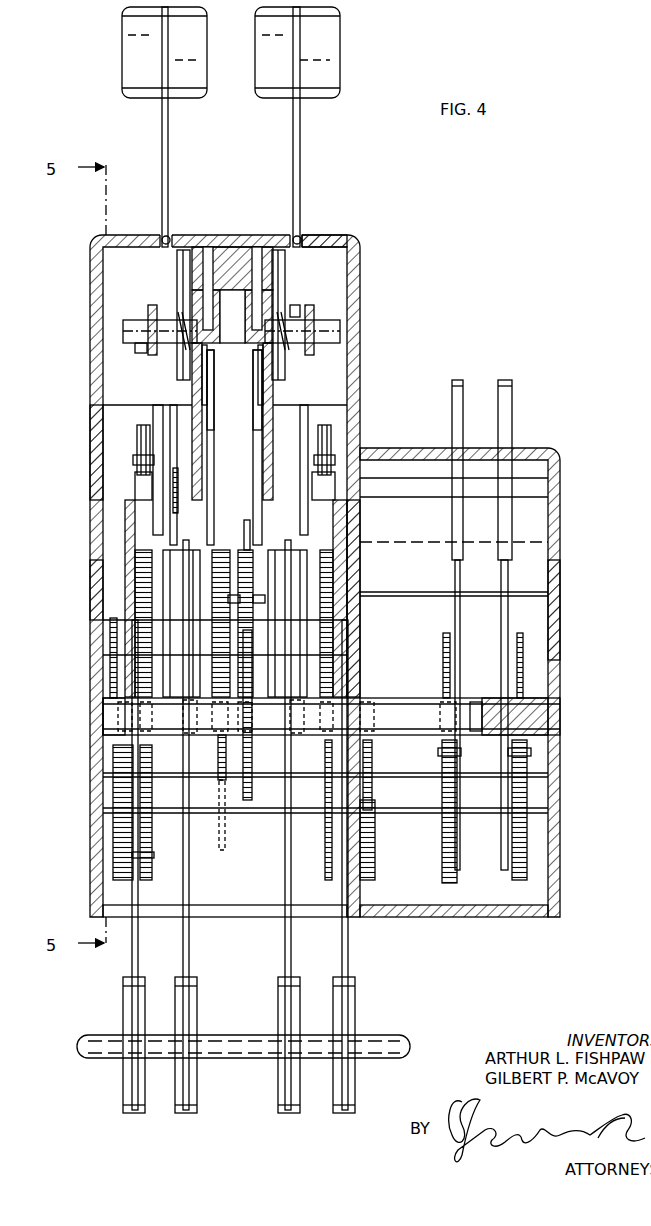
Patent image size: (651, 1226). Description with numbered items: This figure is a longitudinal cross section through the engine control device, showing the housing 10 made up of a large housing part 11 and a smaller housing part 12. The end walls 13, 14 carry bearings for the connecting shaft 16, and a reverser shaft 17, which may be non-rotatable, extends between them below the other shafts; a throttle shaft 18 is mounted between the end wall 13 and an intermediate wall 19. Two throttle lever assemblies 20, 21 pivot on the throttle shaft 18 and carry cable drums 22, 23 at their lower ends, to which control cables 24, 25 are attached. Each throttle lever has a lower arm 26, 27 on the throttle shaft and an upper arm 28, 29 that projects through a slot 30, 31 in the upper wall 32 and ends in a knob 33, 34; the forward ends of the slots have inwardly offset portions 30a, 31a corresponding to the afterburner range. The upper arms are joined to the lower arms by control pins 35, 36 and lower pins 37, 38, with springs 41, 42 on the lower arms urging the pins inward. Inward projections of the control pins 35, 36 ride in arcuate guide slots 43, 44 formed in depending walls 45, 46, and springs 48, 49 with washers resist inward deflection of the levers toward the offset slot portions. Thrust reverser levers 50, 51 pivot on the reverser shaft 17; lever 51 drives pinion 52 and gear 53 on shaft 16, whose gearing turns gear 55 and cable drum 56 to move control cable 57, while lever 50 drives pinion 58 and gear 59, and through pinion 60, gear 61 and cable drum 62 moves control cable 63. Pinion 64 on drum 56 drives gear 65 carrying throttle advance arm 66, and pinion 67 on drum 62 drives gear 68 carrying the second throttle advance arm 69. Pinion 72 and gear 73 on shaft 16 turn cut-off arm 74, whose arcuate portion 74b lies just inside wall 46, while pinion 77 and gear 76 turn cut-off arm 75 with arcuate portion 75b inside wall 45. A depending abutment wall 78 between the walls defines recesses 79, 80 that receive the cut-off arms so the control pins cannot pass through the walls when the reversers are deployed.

The housing 10 is at (88, 356).
The large housing part 11 is at (90, 440).
The smaller housing part 12 is at (560, 463).
The end wall 13 is at (90, 590).
The end wall 14 is at (560, 605).
The connecting shaft 16 is at (400, 706).
The reverser shaft 17 is at (412, 800).
The throttle shaft 18 is at (110, 614).
The intermediate wall 19 is at (350, 575).
The throttle lever assembly 20 is at (160, 410).
The throttle lever assembly 21 is at (312, 410).
The cable drum 22 is at (190, 708).
The cable drum 23 is at (297, 708).
The control cable 24 is at (189, 947).
The control cable 25 is at (285, 943).
The lower arm 26 is at (153, 524).
The lower arm 27 is at (300, 525).
The upper arm 28 is at (163, 166).
The upper arm 29 is at (300, 168).
The slot 30 is at (170, 236).
The offset slot portion 30a is at (177, 268).
The slot 31 is at (300, 236).
The offset slot portion 31a is at (285, 268).
The upper wall 32 is at (340, 242).
The knob 33 is at (200, 72).
The knob 34 is at (330, 30).
The control pin 35 is at (140, 318).
The control pin 36 is at (340, 322).
The pin 37 is at (135, 486).
The pin 38 is at (335, 486).
The spring 41 is at (137, 441).
The spring 42 is at (331, 441).
The arcuate guide slot 43 is at (202, 328).
The arcuate guide slot 44 is at (259, 352).
The depending wall 45 is at (204, 355).
The depending wall 46 is at (268, 378).
The spring 48 is at (180, 346).
The spring 49 is at (306, 345).
The thrust reverser lever 50 is at (463, 395).
The thrust reverser lever 51 is at (512, 406).
The pinion 52 is at (527, 852).
The gear 53 is at (523, 642).
The gear 55 is at (375, 864).
The cable drum 56 is at (382, 774).
The control cable 57 is at (348, 947).
The pinion 58 is at (442, 875).
The gear 59 is at (443, 648).
The pinion 60 is at (104, 697).
The gear 61 is at (118, 855).
The cable drum 62 is at (152, 856).
The control cable 63 is at (132, 960).
The pinion 64 is at (325, 856).
The gear 65 is at (333, 552).
The throttle advance arm 66 is at (340, 522).
The pinion 67 is at (150, 838).
The gear 68 is at (135, 650).
The throttle advance arm 69 is at (128, 560).
The pinion 72 is at (252, 750).
The gear 73 is at (247, 545).
The cut-off arm 74 is at (253, 500).
The arcuate portion 74b is at (253, 440).
The cut-off arm 75 is at (207, 507).
The arcuate portion 75b is at (214, 415).
The gear 76 is at (243, 560).
The pinion 77 is at (218, 758).
The abutment wall 78 is at (240, 250).
The recess 79 is at (208, 250).
The recess 80 is at (257, 250).